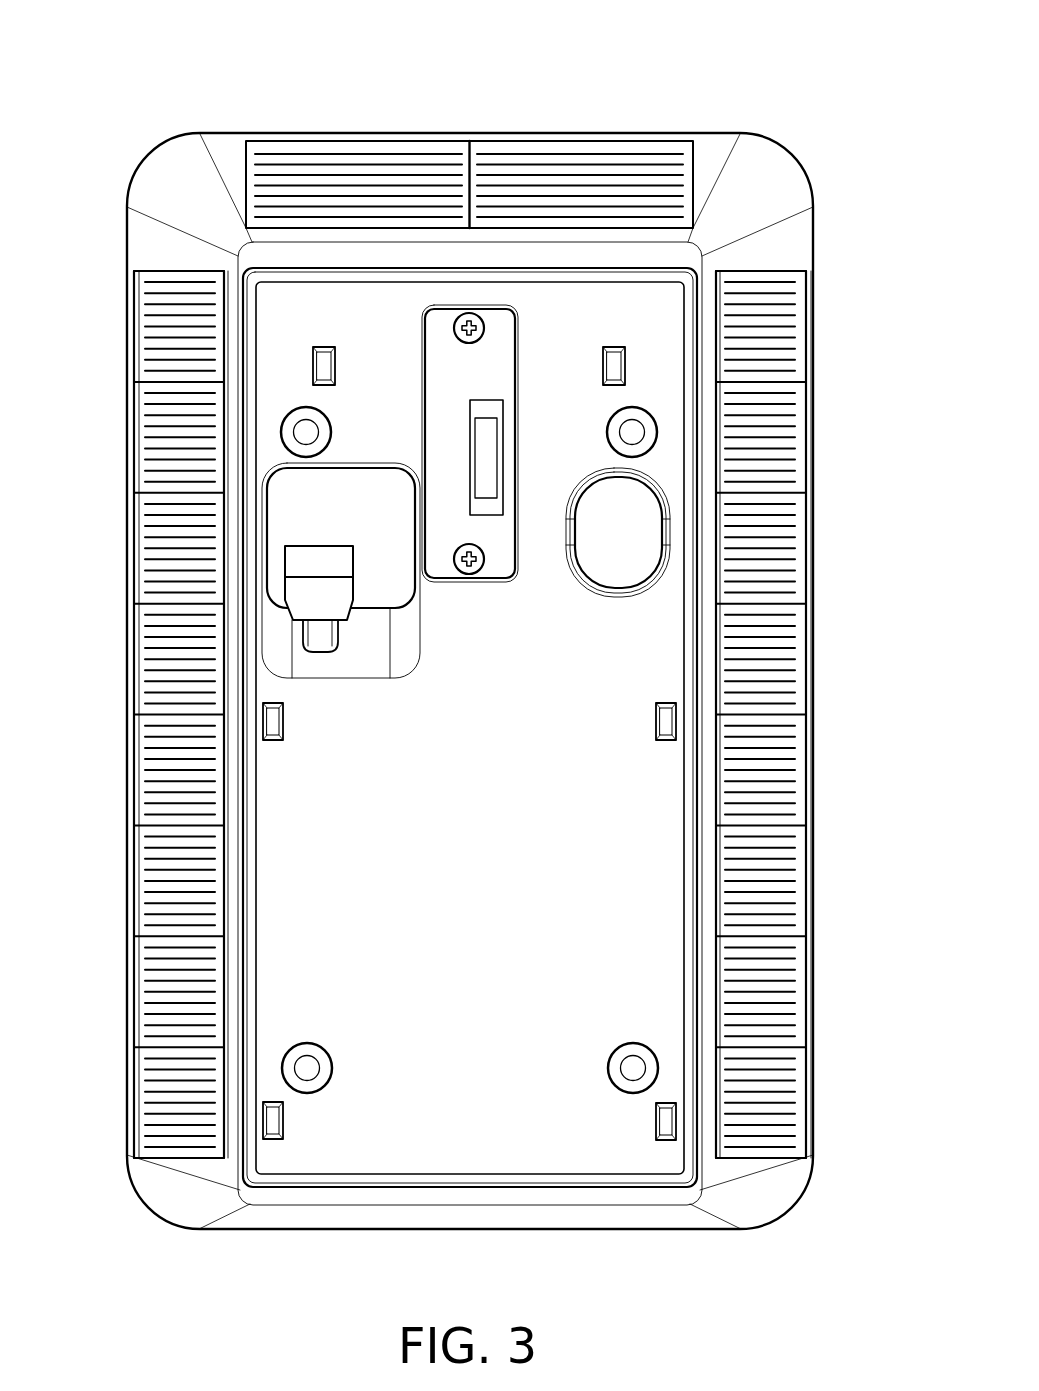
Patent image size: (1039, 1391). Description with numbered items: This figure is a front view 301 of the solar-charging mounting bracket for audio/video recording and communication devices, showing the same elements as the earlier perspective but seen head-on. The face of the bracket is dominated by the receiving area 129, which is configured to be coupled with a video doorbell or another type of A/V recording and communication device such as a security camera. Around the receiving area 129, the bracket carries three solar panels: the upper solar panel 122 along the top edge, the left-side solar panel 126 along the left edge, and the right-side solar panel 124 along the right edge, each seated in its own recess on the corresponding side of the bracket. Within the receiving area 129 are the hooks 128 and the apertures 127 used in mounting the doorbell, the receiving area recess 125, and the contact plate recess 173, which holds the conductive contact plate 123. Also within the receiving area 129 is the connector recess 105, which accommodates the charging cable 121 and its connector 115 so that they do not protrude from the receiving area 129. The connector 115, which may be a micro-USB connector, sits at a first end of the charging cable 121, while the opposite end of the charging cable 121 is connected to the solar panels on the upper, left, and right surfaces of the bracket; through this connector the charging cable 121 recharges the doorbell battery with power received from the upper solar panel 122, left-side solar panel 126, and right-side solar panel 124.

The rear view of device housing 301 is at (103, 34).
The upper solar panel 122 is at (522, 180).
The contact plate recess 173 is at (443, 350).
The hooks 128 is at (615, 370).
The apertures 127 is at (305, 432).
The connector recess 105 is at (287, 507).
The connector 115 is at (312, 560).
The charging cable 121 is at (320, 633).
The receiving area recess 125 is at (627, 530).
The conductive contact plate 123 is at (490, 512).
The left-side solar panel 126 is at (178, 925).
The right-side solar panel 124 is at (763, 935).
The receiving area 129 is at (453, 1158).